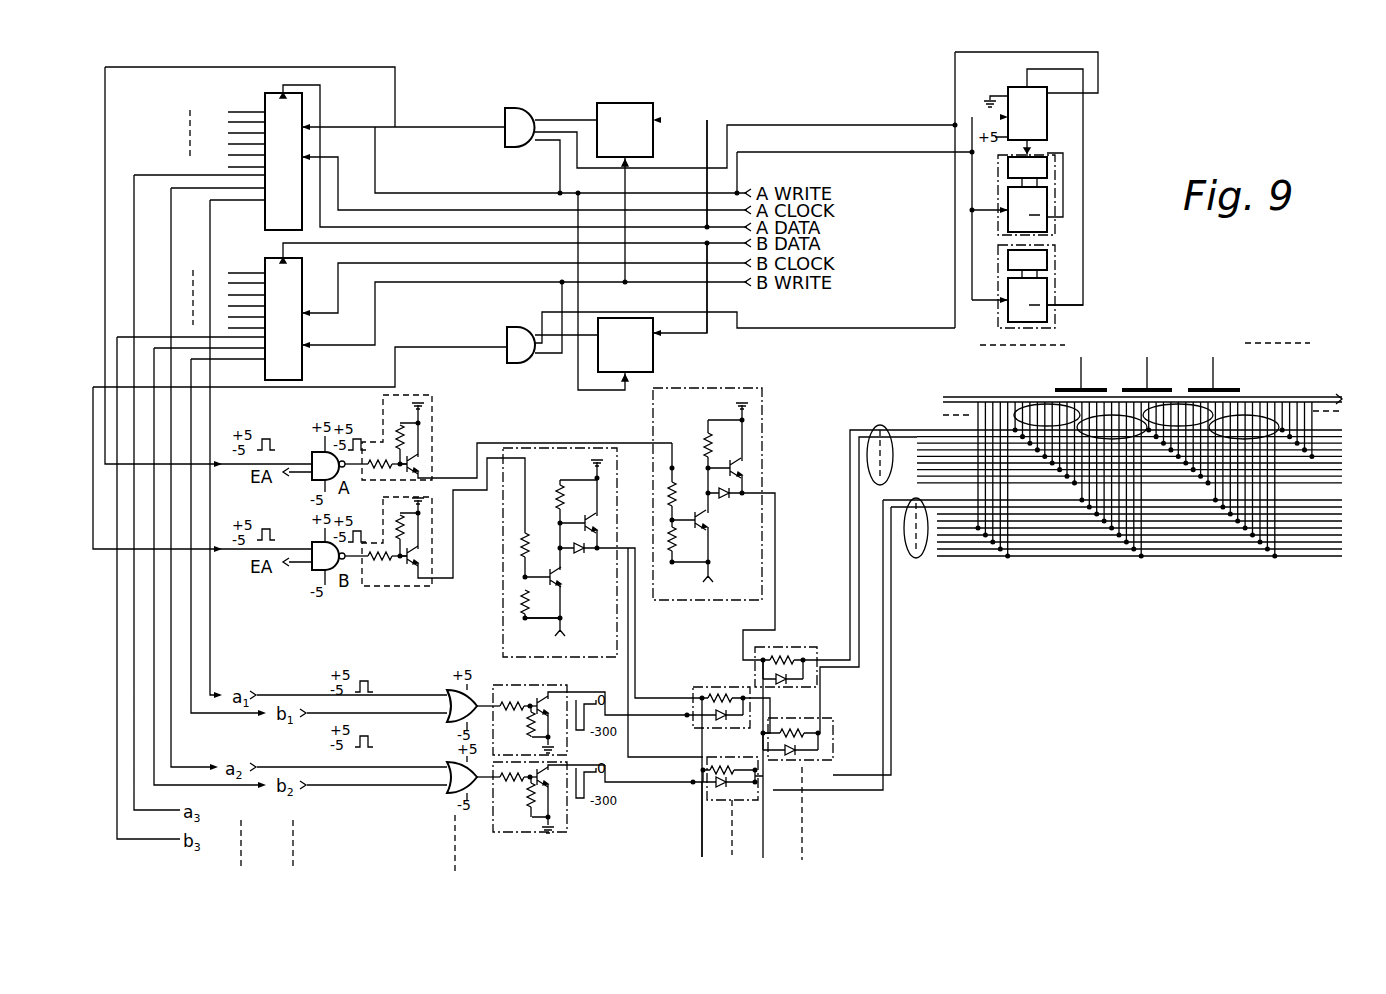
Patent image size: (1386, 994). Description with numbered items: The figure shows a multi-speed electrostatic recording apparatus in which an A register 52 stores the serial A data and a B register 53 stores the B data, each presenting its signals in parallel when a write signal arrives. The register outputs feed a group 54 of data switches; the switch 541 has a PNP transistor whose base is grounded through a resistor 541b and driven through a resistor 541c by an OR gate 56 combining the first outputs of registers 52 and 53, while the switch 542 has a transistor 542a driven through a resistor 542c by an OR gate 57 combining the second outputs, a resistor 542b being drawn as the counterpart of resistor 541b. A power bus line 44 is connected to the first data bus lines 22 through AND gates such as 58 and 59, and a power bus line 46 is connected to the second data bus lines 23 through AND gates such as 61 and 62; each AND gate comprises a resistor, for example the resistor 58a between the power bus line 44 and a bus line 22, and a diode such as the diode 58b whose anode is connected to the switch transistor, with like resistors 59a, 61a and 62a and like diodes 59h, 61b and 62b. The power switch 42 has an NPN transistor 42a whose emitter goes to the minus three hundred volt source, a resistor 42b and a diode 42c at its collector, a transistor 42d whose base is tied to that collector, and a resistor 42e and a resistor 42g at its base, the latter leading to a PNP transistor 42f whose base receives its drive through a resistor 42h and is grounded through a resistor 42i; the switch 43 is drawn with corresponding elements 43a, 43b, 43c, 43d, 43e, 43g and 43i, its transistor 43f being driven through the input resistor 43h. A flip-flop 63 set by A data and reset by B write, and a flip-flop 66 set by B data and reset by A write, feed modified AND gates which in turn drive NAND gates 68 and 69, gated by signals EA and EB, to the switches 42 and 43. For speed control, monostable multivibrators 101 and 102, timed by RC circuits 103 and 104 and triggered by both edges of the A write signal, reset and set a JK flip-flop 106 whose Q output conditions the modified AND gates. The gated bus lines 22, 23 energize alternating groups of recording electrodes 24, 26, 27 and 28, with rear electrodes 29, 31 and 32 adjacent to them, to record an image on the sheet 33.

The A register 52 is at (267, 93).
The B register 53 is at (267, 258).
The flip-flop 63 is at (640, 103).
The flip-flop 66 is at (655, 350).
The JK flip-flop 106 is at (1047, 122).
The RC circuit 103 is at (1047, 165).
The monostable multivibrator 101 is at (1047, 205).
The RC circuit 104 is at (1047, 257).
The monostable multivibrator 102 is at (1047, 298).
The NAND gate 68 is at (318, 450).
The NAND gate 69 is at (318, 542).
The power switch 42 is at (433, 400).
The resistor 42h is at (375, 470).
The resistor 42i is at (405, 440).
The PNP transistor 42f is at (420, 482).
The resistor 42b is at (706, 445).
The resistor 42g is at (696, 492).
The NPN transistor 42d is at (745, 462).
The diode 42c is at (730, 498).
The NPN switching transistor 42a is at (705, 533).
The resistor 42e is at (676, 558).
The switch 43 is at (433, 541).
The input resistor 43h is at (378, 562).
The resistor 43i is at (405, 520).
The transistor 43f is at (420, 580).
The resistor 43g is at (520, 548).
The resistor 43e is at (520, 605).
The resistor 43b is at (556, 493).
The transistor 43d is at (600, 510).
The diode 43c is at (578, 552).
The transistor 43a is at (565, 590).
The OR gate 56 is at (452, 718).
The OR gate 57 is at (452, 790).
The switch group 54 is at (552, 700).
The switch 541 is at (570, 750).
The resistor 541c is at (509, 702).
The resistor 541b is at (531, 740).
The switch 542 is at (558, 834).
The transistor 542a is at (560, 800).
The resistor 542b is at (530, 814).
The resistor 542c is at (510, 785).
The AND gate 61 is at (693, 725).
The resistor 61a is at (715, 690).
The diode 61b is at (702, 740).
The AND gate 62 is at (768, 808).
The resistor 62a is at (726, 766).
The diode 62b is at (712, 795).
The power bus line 46 is at (701, 850).
The power bus line 44 is at (765, 852).
The AND gate 58 is at (818, 650).
The resistor 58a is at (785, 655).
The diode 58b is at (805, 681).
The AND gate 59 is at (833, 740).
The resistor 59a is at (790, 730).
The diode 59h is at (815, 755).
The first data bus lines 22 is at (868, 465).
The second data bus lines 23 is at (910, 558).
The sheet 33 is at (960, 397).
The recording electrode group 24 is at (1017, 405).
The recording electrode group 26 is at (1120, 415).
The recording electrode group 27 is at (1183, 404).
The recording electrode group 28 is at (1258, 415).
The rear electrode 29 is at (1075, 388).
The rear electrode 31 is at (1162, 388).
The rear electrode 32 is at (1230, 388).